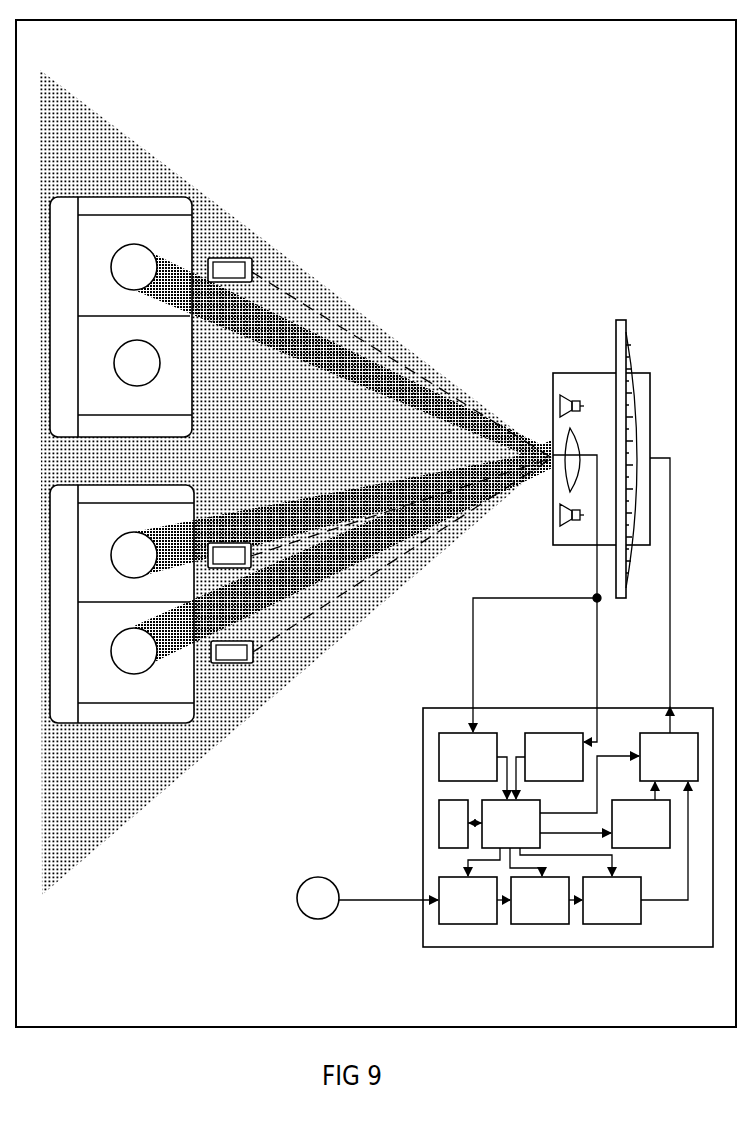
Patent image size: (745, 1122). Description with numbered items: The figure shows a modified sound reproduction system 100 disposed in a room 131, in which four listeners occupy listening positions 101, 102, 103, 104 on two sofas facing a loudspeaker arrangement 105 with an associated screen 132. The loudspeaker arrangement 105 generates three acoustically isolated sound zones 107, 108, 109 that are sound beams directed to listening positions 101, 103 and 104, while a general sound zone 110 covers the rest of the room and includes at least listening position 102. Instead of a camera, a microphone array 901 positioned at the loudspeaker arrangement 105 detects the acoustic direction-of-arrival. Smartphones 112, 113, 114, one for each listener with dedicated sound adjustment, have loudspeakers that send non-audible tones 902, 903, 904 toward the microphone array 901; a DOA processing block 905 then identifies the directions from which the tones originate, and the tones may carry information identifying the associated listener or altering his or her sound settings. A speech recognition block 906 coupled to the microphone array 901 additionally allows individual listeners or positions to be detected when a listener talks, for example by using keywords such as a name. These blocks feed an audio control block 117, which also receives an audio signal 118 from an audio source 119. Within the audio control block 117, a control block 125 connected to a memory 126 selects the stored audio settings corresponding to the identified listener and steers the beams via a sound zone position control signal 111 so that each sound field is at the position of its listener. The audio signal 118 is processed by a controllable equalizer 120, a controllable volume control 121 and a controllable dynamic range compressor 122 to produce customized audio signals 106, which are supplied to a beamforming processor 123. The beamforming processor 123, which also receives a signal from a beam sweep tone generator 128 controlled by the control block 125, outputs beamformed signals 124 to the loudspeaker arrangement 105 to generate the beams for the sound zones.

The sound reproduction system 100 is at (199, 845).
The listening position 101 is at (127, 268).
The listening position 102 is at (128, 364).
The listening position 103 is at (127, 554).
The listening position 104 is at (127, 651).
The loudspeaker arrangement 105 is at (579, 454).
The customized audio signals 106 is at (650, 901).
The sound zone 107 is at (410, 381).
The sound zone 108 is at (360, 505).
The sound zone 109 is at (413, 525).
The general sound zone 110 is at (366, 316).
The sound zone position control signal 111 is at (618, 755).
The listener evaluation block 112 is at (228, 268).
The listener evaluation block 113 is at (230, 555).
The listener evaluation block 114 is at (233, 653).
The audio control block 117 is at (507, 708).
The audio signal 118 is at (385, 901).
The audio source 119 is at (318, 876).
The controllable equalizer 120 is at (468, 925).
The controllable volume control 121 is at (540, 925).
The controllable dynamic range compressor 122 is at (612, 925).
The beamforming processor 123 is at (650, 733).
The beamformed signals 124 is at (670, 632).
The control block 125 is at (540, 803).
The memory 126 is at (439, 826).
The beam sweep tone generator 128 is at (628, 849).
The room 131 is at (17, 40).
The screen 132 is at (620, 322).
The microphone array 901 is at (553, 492).
The non-audible tone 902 is at (306, 304).
The non-audible tone 903 is at (465, 487).
The non-audible tone 904 is at (375, 575).
The DOA processing block 905 is at (440, 732).
The speech recognition block 906 is at (545, 733).